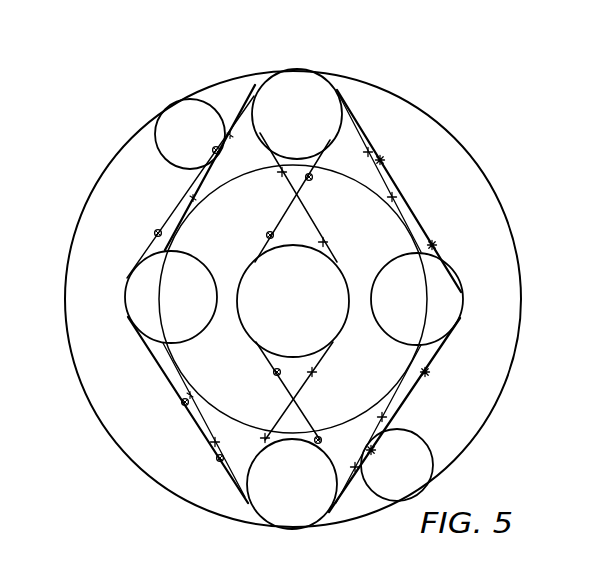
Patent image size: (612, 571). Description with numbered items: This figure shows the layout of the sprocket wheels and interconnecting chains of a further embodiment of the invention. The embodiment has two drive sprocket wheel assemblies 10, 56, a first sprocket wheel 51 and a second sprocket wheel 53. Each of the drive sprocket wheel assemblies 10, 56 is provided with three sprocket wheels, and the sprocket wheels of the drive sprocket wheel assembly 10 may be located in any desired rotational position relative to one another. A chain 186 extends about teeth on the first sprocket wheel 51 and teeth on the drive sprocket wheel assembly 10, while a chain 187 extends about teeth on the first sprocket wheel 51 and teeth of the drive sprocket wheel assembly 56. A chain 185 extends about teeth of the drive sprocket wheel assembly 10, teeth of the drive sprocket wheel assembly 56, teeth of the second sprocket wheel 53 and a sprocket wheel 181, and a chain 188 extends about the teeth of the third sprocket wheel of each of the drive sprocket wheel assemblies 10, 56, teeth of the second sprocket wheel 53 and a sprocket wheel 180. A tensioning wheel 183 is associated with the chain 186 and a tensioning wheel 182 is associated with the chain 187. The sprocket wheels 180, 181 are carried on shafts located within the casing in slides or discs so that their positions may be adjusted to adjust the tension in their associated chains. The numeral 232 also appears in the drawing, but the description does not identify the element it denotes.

The drive sprocket wheel assembly 10 is at (322, 70).
The first sprocket wheel 51 is at (381, 255).
The second sprocket wheel 53 is at (324, 298).
The drive sprocket wheel assembly 56 is at (307, 531).
The sprocket wheel 180 is at (192, 316).
The sprocket wheel 181 is at (440, 318).
The tensioning wheel 182 is at (422, 482).
The tensioning wheel 183 is at (210, 148).
The chain 185 is at (306, 213).
The chain 186 is at (221, 150).
The chain 187 is at (207, 437).
The chain 188 is at (178, 198).
The filler 232 is at (216, 558).